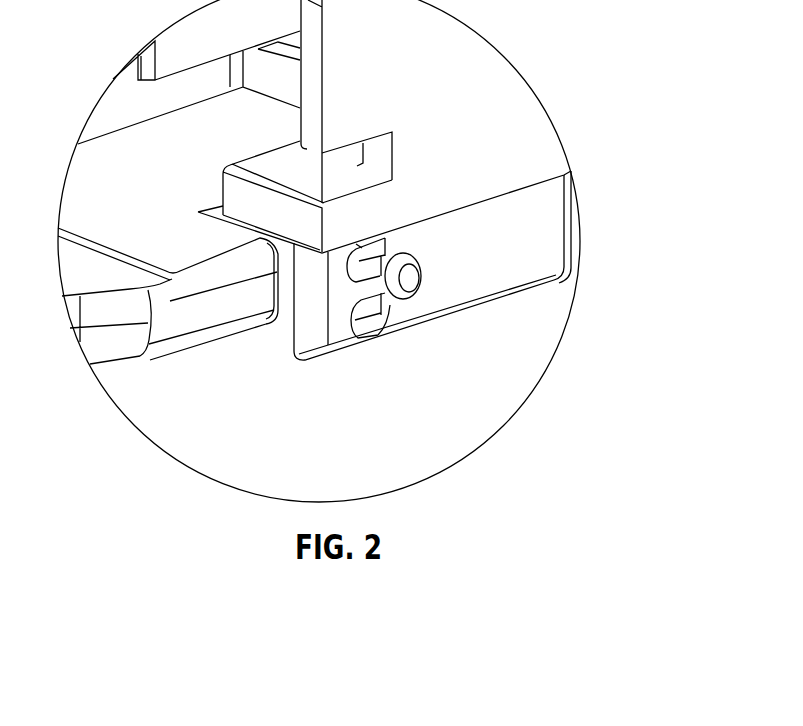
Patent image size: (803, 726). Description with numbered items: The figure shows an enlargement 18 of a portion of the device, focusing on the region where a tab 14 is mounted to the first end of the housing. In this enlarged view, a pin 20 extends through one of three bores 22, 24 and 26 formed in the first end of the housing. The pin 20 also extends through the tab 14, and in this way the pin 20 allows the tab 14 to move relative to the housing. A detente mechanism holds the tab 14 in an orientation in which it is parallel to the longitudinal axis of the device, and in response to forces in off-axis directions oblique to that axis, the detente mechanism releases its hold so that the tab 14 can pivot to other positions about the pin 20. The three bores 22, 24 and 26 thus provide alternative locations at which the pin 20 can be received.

The tab 14 is at (151, 362).
The enlargement 18 is at (497, 50).
The pin 20 is at (412, 272).
The bore 22 is at (396, 250).
The bore 24 is at (358, 243).
The bore 26 is at (376, 338).